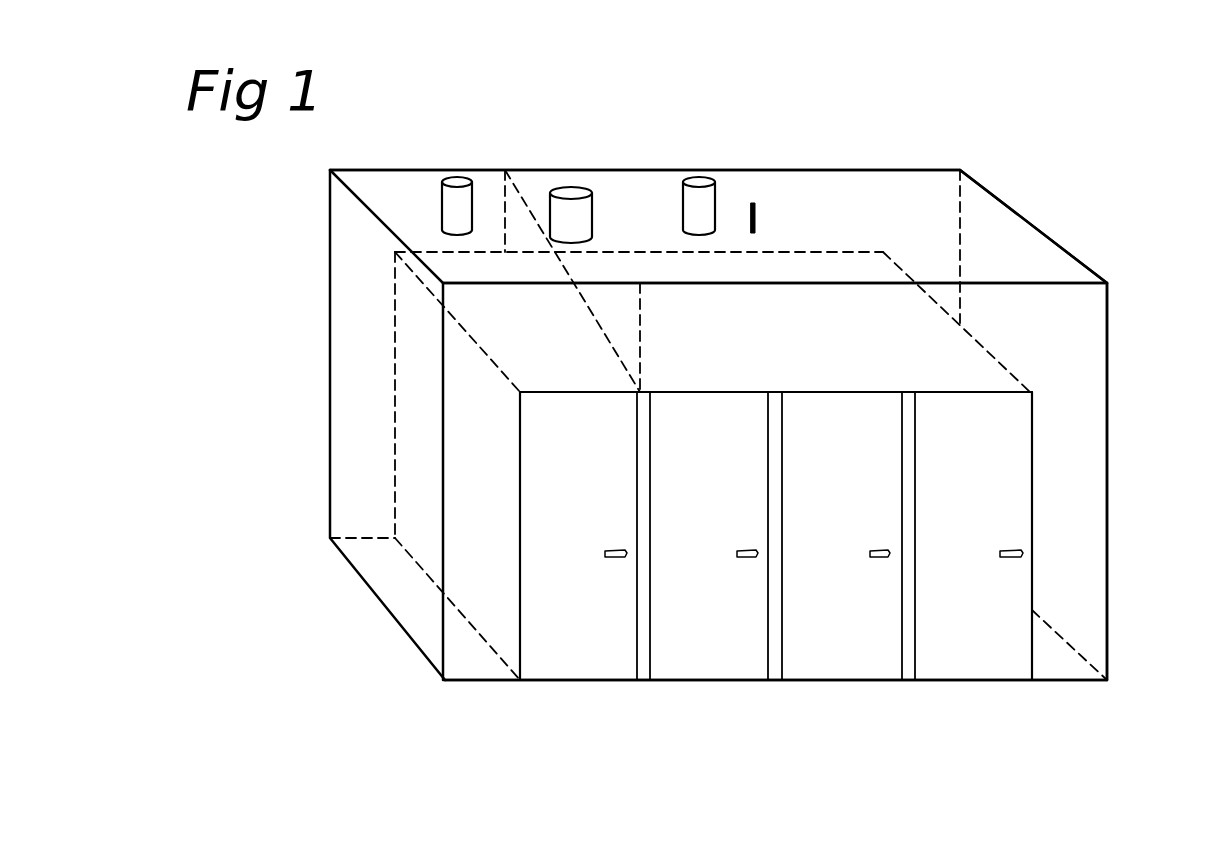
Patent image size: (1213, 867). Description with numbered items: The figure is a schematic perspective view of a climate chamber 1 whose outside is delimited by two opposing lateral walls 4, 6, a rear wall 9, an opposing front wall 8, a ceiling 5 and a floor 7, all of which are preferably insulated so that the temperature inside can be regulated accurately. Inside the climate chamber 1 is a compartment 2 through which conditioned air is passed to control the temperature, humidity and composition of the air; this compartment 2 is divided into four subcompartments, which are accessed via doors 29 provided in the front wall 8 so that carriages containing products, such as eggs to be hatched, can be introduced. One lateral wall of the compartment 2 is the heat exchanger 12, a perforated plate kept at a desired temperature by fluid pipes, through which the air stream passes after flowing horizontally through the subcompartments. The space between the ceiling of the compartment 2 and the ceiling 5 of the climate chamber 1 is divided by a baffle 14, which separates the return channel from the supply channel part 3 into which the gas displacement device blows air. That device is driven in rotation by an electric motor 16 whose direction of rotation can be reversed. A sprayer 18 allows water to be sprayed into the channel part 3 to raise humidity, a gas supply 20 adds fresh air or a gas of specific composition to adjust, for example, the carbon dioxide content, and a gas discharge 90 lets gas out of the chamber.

The climate chamber 1 is at (1005, 147).
The compartment 2 is at (973, 332).
The channel part 3 is at (858, 223).
The lateral wall of the climate chamber 4 is at (1108, 433).
The ceiling of the climate chamber 5 is at (640, 212).
The lateral wall of the climate chamber 6 is at (363, 475).
The floor of the climate chamber 7 is at (1058, 680).
The front wall of the climate chamber 8 is at (1075, 530).
The rear wall of the climate chamber 9 is at (367, 320).
The heat exchanger 12 is at (497, 572).
The dividing baffle 14 is at (540, 228).
The motor 16 is at (568, 190).
The sprayer 18 is at (755, 218).
The gas supply 20 is at (447, 200).
The door 29 is at (703, 620).
The gas discharge 90 is at (698, 180).